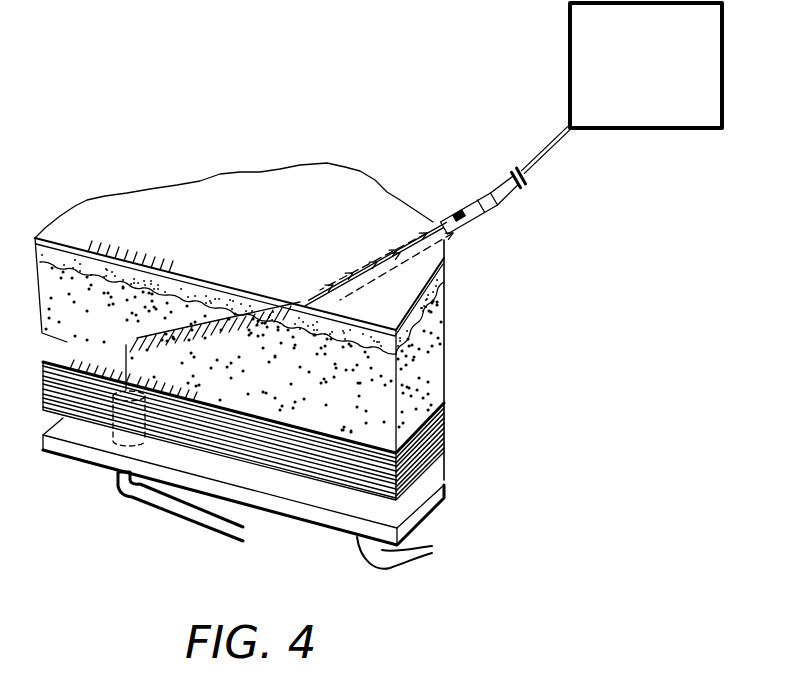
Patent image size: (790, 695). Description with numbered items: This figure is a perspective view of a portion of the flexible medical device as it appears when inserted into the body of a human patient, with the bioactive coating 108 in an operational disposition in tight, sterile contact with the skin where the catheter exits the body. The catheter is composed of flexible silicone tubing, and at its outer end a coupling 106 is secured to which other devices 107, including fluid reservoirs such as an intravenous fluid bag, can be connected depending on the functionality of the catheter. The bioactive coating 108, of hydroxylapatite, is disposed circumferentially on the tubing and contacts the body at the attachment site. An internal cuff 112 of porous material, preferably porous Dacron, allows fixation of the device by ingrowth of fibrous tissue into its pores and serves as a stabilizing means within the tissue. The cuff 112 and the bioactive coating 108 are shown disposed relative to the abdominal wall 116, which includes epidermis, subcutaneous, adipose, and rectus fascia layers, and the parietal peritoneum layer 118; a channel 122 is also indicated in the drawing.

The coupling 106 is at (505, 197).
The other devices 107 is at (570, 22).
The bioactive coating 108 is at (362, 267).
The internal cuff 112 is at (128, 417).
The abdominal wall 116 is at (417, 270).
The parietal peritoneum layer 118 is at (297, 520).
The channel 122 is at (312, 298).